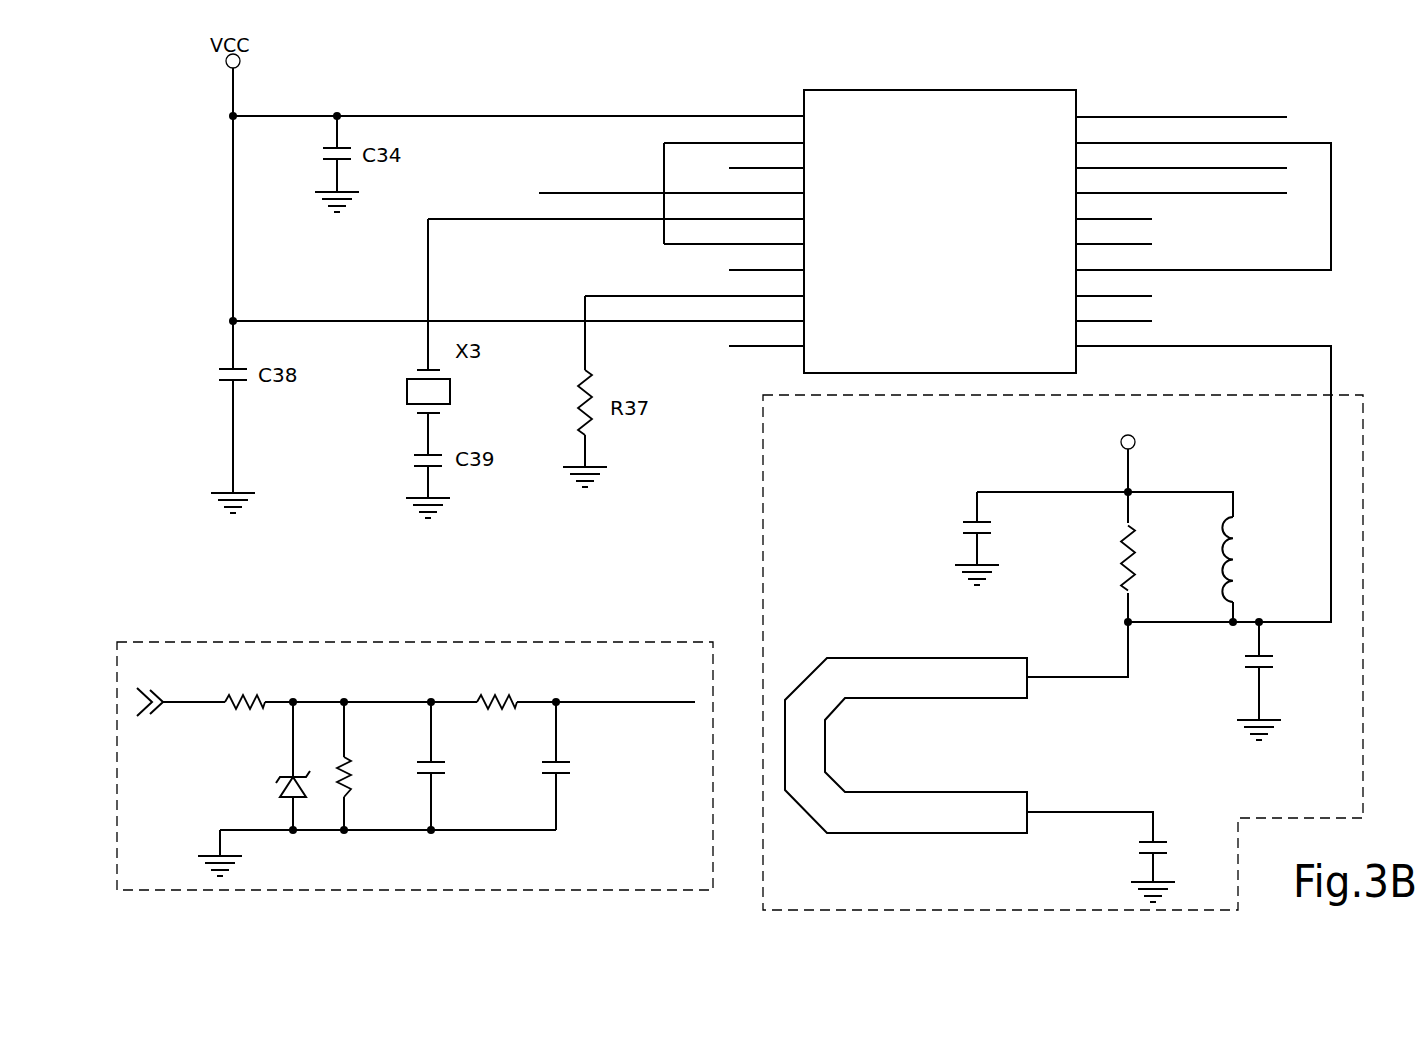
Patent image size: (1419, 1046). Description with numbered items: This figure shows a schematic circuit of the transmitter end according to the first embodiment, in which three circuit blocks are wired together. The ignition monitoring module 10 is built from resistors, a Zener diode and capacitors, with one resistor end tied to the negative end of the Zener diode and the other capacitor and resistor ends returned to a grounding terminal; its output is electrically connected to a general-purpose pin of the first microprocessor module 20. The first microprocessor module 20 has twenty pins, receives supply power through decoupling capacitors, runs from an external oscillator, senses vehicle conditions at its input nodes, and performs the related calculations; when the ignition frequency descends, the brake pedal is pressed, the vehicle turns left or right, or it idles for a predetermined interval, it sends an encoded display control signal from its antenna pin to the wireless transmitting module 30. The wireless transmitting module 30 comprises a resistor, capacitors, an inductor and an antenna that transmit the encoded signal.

The ignition monitoring module 10 is at (587, 642).
The first microprocessor module 20 is at (1060, 90).
The wireless transmitting module 30 is at (763, 532).